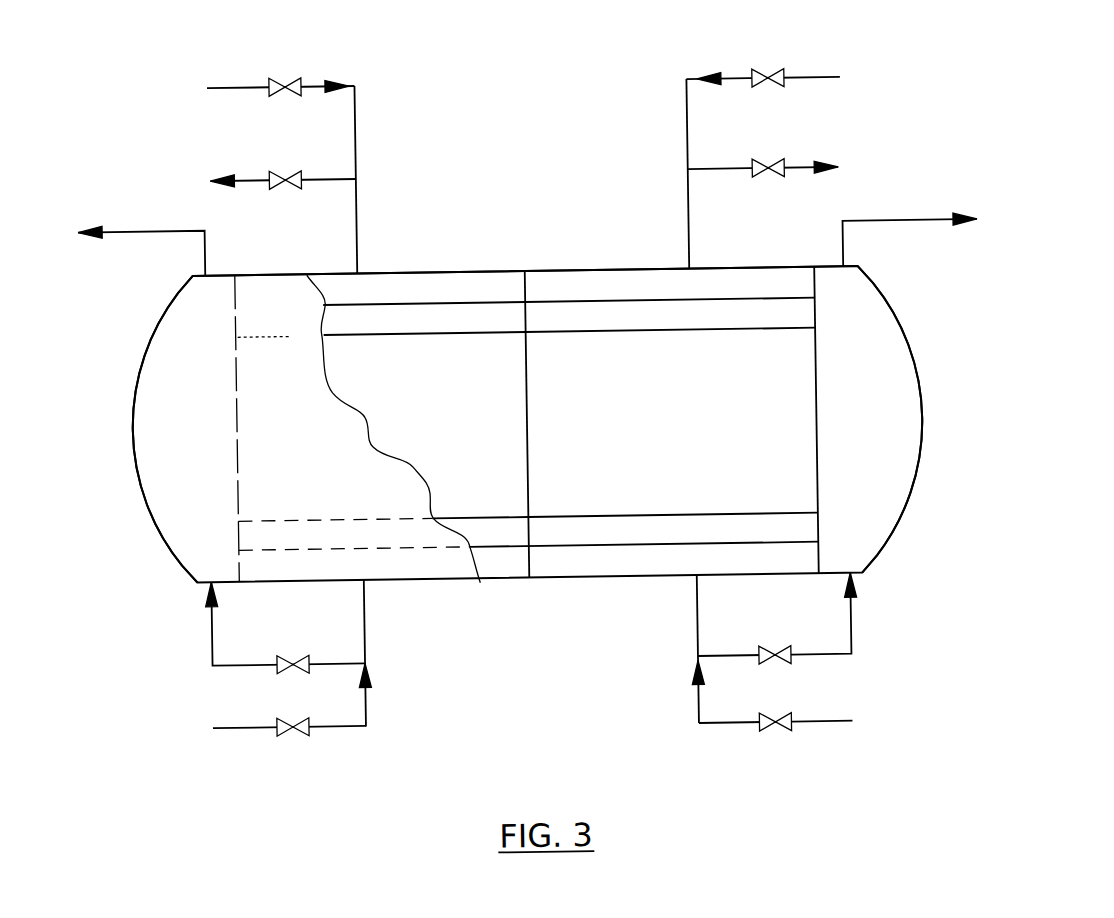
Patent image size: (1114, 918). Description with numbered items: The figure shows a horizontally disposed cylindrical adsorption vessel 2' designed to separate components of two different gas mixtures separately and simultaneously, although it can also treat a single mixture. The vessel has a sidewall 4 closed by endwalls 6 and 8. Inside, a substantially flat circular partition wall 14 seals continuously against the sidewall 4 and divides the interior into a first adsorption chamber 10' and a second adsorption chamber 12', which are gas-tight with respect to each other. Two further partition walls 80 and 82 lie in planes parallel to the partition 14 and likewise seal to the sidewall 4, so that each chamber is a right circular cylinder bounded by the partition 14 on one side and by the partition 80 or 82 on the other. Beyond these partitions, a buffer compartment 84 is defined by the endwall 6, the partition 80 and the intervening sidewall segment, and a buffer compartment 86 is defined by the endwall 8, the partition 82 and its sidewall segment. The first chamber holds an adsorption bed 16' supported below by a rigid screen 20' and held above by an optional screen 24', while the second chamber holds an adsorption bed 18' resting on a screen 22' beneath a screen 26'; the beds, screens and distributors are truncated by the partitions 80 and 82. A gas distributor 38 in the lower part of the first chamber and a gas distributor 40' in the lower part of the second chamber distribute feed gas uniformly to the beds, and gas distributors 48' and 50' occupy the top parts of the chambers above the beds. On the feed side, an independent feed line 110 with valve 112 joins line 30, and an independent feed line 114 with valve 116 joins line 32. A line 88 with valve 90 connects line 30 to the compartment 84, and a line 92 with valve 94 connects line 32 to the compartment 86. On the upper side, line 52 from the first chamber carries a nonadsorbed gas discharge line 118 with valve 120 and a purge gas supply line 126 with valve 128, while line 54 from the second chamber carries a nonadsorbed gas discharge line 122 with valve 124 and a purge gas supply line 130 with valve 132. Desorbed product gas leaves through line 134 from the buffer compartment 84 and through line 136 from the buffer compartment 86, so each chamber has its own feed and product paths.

The adsorption vessel 2' is at (613, 423).
The sidewall 4 is at (525, 249).
The endwall 6 is at (142, 507).
The endwall 8 is at (907, 508).
The first adsorption chamber 10' is at (443, 430).
The second adsorption chamber 12' is at (623, 426).
The partition wall 14 is at (528, 375).
The adsorption bed 16' is at (228, 366).
The adsorption bed 18' is at (847, 363).
The screen 20' is at (354, 514).
The screen 22' is at (673, 489).
The screen 24' is at (425, 358).
The screen 26' is at (671, 355).
The line 30 is at (362, 618).
The line 32 is at (695, 614).
The gas distributor 38 is at (394, 455).
The gas distributor 40' is at (625, 577).
The gas distributor 48' is at (423, 265).
The gas distributor 50' is at (669, 267).
The line 52 is at (361, 200).
The line 54 is at (686, 205).
The partition wall 80 is at (272, 428).
The partition wall 82 is at (776, 421).
The buffer compartment 84 is at (176, 441).
The buffer compartment 86 is at (864, 441).
The line 88 is at (209, 630).
The valve 90 is at (266, 686).
The line 92 is at (848, 632).
The valve 94 is at (786, 676).
The feed line 110 is at (257, 759).
The valve 112 is at (304, 756).
The feed line 114 is at (818, 697).
The valve 116 is at (786, 748).
The nonadsorbed gas discharge line 118 is at (262, 159).
The valve 120 is at (306, 161).
The nonadsorbed gas discharge line 122 is at (762, 148).
The valve 124 is at (821, 147).
The purge gas supply line 126 is at (240, 71).
The valve 128 is at (256, 61).
The purge gas supply line 130 is at (793, 59).
The valve 132 is at (764, 56).
The desorbed product gas line 134 is at (142, 237).
The desorbed product gas line 136 is at (915, 248).